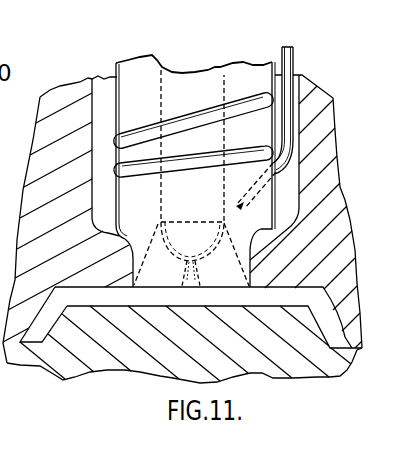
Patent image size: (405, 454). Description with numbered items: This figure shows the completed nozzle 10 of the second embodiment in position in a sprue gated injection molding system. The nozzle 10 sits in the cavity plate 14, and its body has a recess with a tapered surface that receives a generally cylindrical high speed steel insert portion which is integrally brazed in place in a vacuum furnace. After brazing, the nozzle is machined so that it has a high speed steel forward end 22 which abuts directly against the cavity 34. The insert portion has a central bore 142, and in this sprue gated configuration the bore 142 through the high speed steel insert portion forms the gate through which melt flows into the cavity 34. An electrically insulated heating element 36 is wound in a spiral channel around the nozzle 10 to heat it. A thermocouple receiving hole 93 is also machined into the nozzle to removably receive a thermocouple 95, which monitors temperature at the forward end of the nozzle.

The nozzle 10 is at (128, 77).
The electrically insulated heating element 36 is at (260, 97).
The thermocouple 95 is at (291, 137).
The thermocouple receiving hole 93 is at (252, 189).
The forward end 22 is at (141, 272).
The central bore 142 is at (188, 278).
The cavity plate 14 is at (299, 292).
The cavity 34 is at (348, 370).